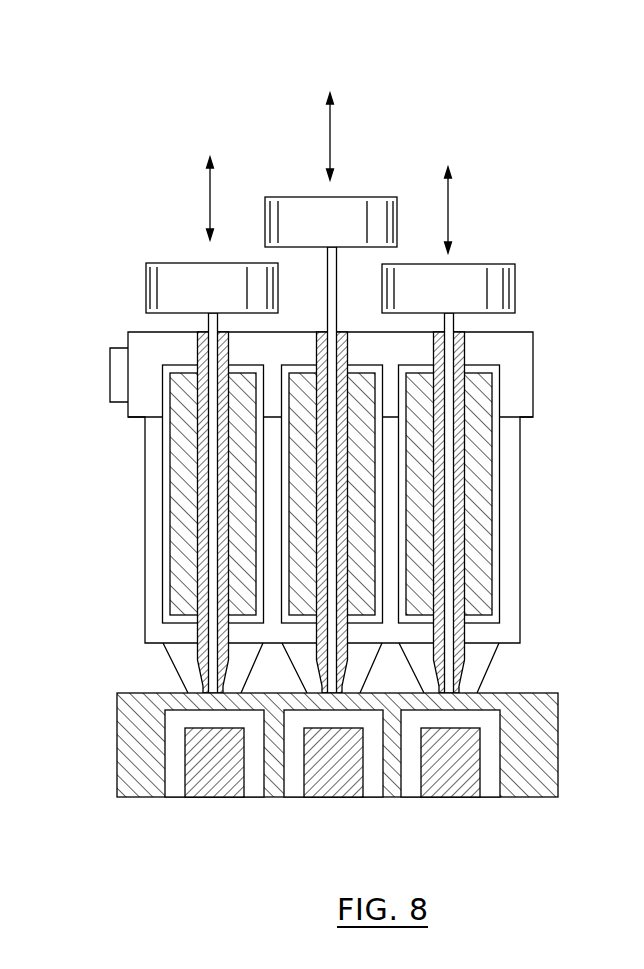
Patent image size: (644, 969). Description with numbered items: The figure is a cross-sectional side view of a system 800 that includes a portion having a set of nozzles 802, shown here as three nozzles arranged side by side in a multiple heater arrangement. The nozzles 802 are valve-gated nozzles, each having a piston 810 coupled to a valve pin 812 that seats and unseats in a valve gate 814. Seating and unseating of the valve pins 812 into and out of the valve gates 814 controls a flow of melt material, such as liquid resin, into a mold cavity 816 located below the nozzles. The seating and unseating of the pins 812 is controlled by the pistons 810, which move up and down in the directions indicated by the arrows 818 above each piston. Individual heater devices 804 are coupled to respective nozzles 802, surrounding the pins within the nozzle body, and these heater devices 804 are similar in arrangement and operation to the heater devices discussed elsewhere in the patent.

The system 800 is at (341, 441).
The nozzles 802 is at (174, 363).
The heater device 804 is at (237, 465).
The pistons 810 is at (167, 264).
The valve pins 812 is at (327, 327).
The valve gates 814 is at (191, 673).
The mold cavity 816 is at (497, 726).
The arrows 818 is at (207, 187).